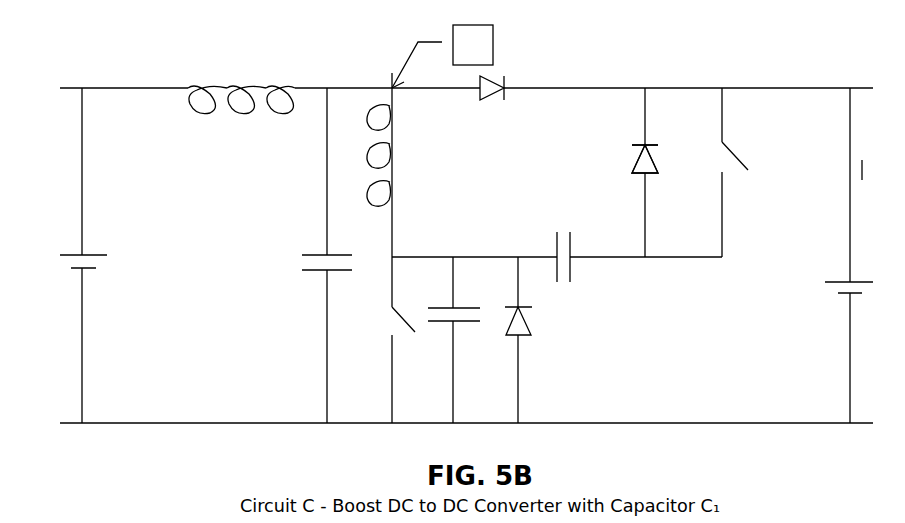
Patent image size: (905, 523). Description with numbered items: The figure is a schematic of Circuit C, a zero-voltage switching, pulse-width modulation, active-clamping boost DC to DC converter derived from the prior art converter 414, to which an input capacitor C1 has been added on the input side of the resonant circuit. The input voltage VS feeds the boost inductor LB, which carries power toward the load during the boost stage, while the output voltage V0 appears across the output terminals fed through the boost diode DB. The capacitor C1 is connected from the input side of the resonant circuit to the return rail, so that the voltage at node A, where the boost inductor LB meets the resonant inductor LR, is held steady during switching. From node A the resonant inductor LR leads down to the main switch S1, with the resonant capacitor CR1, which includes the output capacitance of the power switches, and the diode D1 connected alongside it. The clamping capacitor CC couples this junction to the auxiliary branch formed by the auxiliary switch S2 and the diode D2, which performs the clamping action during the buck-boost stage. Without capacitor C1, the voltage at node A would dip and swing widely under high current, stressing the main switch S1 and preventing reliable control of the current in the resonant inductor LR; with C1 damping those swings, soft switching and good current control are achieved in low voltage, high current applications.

The prior art converter 414 is at (631, 72).
The input voltage VS is at (66, 255).
The boost inductor LB is at (241, 118).
The input capacitor C1 is at (309, 255).
The resonant inductor LR is at (396, 172).
The node A is at (442, 56).
The boost diode DB is at (491, 106).
The diode D2 is at (628, 161).
The auxiliary switch S2 is at (737, 172).
The clamping capacitor CC is at (557, 242).
The main switch S1 is at (387, 340).
The resonant capacitor CR1 is at (461, 340).
The diode D1 is at (535, 340).
The output voltage V0 is at (832, 255).